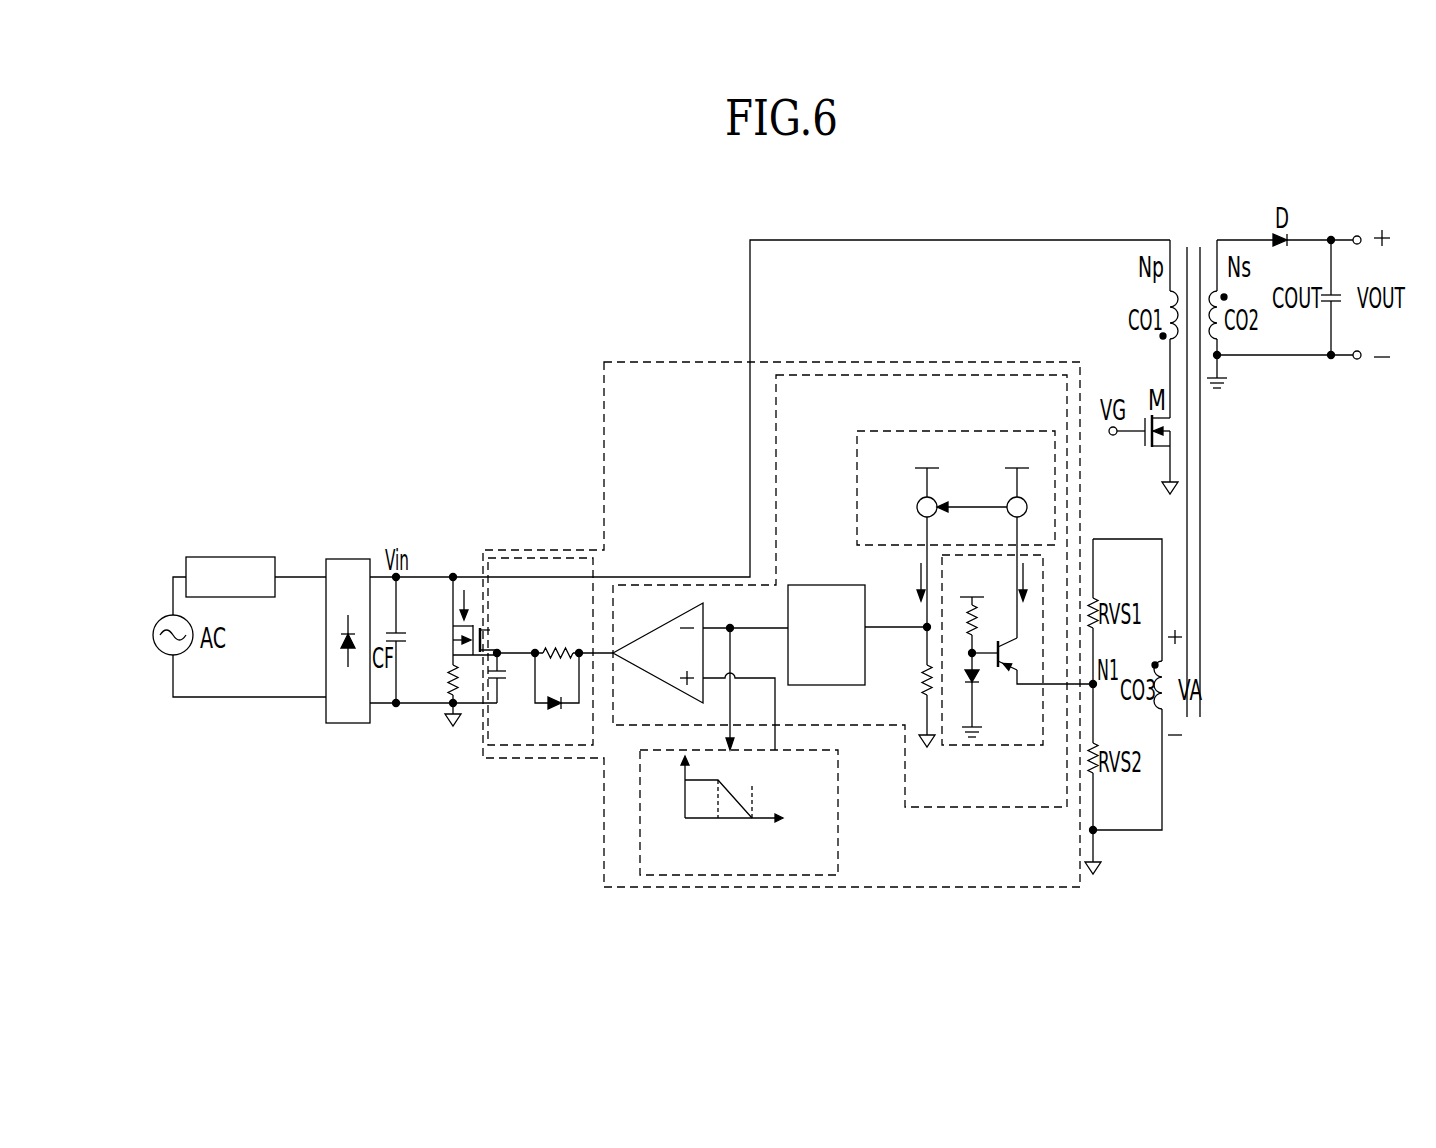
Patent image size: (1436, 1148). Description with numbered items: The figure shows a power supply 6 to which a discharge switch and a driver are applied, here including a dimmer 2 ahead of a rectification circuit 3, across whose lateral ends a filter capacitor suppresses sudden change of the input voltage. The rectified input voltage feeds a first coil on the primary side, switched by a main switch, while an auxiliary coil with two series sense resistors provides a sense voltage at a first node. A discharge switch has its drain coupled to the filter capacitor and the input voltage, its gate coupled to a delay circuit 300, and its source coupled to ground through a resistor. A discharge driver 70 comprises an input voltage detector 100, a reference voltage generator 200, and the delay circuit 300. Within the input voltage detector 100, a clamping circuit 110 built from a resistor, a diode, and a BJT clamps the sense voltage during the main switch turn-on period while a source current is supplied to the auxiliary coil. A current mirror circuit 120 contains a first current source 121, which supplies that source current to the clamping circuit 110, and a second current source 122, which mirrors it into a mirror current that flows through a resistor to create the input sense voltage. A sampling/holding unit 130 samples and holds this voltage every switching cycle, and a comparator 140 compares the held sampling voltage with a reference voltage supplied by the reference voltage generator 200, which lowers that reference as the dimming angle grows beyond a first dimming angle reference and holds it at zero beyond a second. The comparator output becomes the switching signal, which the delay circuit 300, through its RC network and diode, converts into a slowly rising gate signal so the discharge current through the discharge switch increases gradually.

The dimmer 2 is at (240, 557).
The rectification circuit 3 is at (345, 559).
The power supply 6 is at (672, 240).
The discharge driver 70 is at (901, 372).
The input voltage detector 100 is at (948, 808).
The clamping circuit 110 is at (998, 748).
The current mirror circuit 120 is at (963, 431).
The first current source 121 is at (1006, 516).
The second current source 122 is at (914, 506).
The sampling/holding unit 130 is at (823, 585).
The comparator 140 is at (674, 620).
The reference voltage generator 200 is at (838, 797).
The delay circuit 300 is at (531, 550).